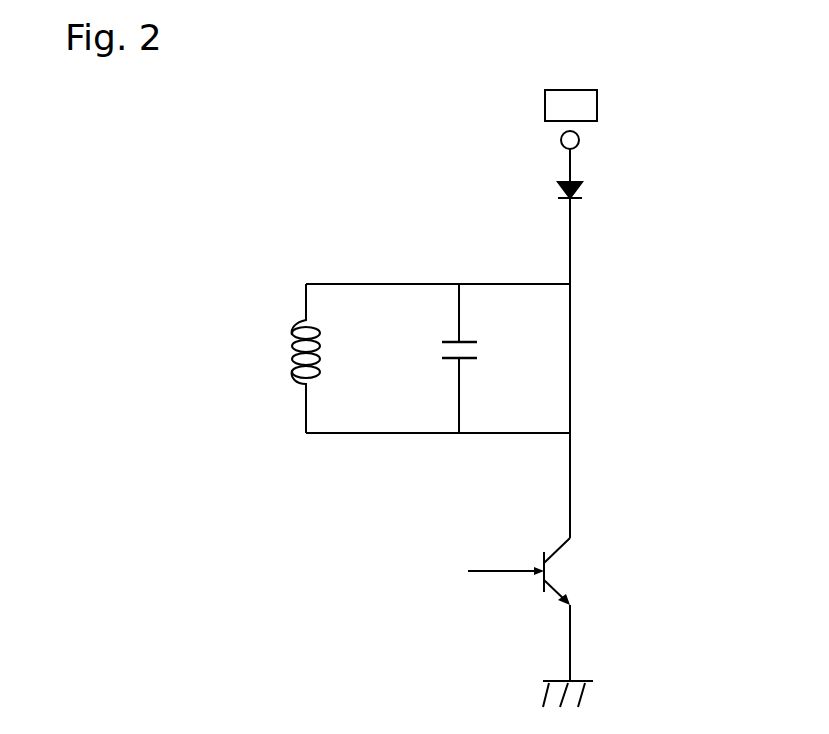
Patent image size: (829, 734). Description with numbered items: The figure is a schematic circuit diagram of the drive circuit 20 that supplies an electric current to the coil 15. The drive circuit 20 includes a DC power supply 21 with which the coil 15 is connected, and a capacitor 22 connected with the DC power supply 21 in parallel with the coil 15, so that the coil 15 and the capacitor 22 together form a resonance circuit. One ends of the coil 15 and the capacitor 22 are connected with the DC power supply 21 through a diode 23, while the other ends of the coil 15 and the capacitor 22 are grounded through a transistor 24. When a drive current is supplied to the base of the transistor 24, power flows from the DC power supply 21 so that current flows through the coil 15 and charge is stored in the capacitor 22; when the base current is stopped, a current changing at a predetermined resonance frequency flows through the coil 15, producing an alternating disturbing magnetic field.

The coil 15 is at (250, 352).
The drive circuit 20 is at (705, 272).
The DC power supply 21 is at (630, 123).
The capacitor 22 is at (518, 352).
The diode 23 is at (610, 190).
The transistor 24 is at (612, 572).